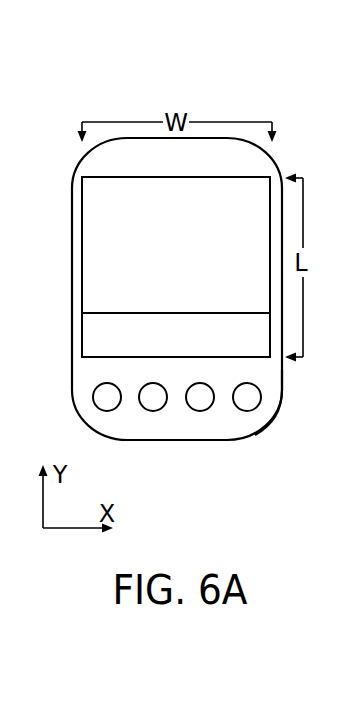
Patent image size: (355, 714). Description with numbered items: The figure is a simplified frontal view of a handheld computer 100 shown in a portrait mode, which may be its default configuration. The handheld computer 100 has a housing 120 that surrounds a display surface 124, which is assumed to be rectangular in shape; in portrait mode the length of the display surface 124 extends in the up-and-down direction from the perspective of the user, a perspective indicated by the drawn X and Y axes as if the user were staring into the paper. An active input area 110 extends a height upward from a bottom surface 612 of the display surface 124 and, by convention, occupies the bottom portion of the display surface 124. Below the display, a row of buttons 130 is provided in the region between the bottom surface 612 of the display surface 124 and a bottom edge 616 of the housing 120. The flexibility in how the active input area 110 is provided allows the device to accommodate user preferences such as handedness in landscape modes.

The handheld computer 100 is at (215, 80).
The housing 120 is at (140, 115).
The display surface 124 is at (218, 232).
The active input area 110 is at (162, 348).
The buttons 130 is at (153, 411).
The bottom surface of display surface 612 is at (263, 358).
The bottom edge of housing 616 is at (168, 442).